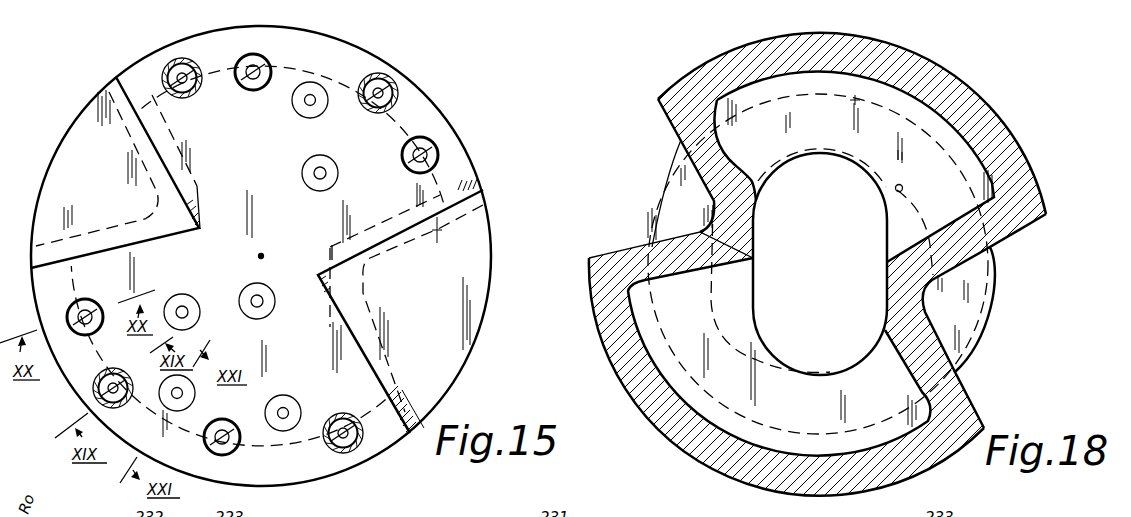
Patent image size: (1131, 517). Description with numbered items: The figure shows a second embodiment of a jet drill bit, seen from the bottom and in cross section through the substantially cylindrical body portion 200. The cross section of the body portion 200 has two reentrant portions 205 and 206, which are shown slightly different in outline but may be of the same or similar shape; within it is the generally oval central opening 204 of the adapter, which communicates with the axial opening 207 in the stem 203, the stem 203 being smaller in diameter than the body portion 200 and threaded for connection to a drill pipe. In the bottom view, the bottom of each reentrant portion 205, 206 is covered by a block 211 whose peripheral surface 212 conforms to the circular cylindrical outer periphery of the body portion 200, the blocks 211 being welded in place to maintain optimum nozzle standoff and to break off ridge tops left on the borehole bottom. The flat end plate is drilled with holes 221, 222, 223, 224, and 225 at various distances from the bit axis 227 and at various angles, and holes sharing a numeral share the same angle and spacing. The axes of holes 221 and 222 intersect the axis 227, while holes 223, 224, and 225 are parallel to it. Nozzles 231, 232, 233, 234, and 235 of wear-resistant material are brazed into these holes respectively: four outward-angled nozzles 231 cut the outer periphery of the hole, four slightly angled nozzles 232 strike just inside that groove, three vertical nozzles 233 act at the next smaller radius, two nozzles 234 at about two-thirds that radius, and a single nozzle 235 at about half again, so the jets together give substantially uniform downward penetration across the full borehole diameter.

In FIG. 15, the body portion 200 is at (340, 37).
In FIG. 18, the body portion 200 is at (707, 467).
In FIG. 18, the stem 203 is at (962, 357).
In FIG. 18, the central opening 204 is at (754, 299).
In FIG. 18, the reentrant portion 205 is at (661, 182).
In FIG. 18, the reentrant portion 206 is at (994, 306).
In FIG. 18, the axial opening 207 is at (903, 186).
In FIG. 15, the block 211 is at (110, 203).
In FIG. 15, the peripheral surface 212 is at (52, 157).
In FIG. 15, the hole 221 is at (165, 79).
In FIG. 15, the hole 222 is at (265, 58).
In FIG. 15, the hole 223 is at (298, 113).
In FIG. 15, the hole 224 is at (327, 175).
In FIG. 15, the hole 225 is at (271, 297).
In FIG. 15, the axis 227 is at (262, 254).
In FIG. 15, the nozzle 231 is at (181, 98).
In FIG. 15, the nozzle 232 is at (248, 90).
In FIG. 15, the nozzle 233 is at (326, 111).
In FIG. 15, the nozzle 234 is at (302, 173).
In FIG. 15, the nozzle 235 is at (268, 314).